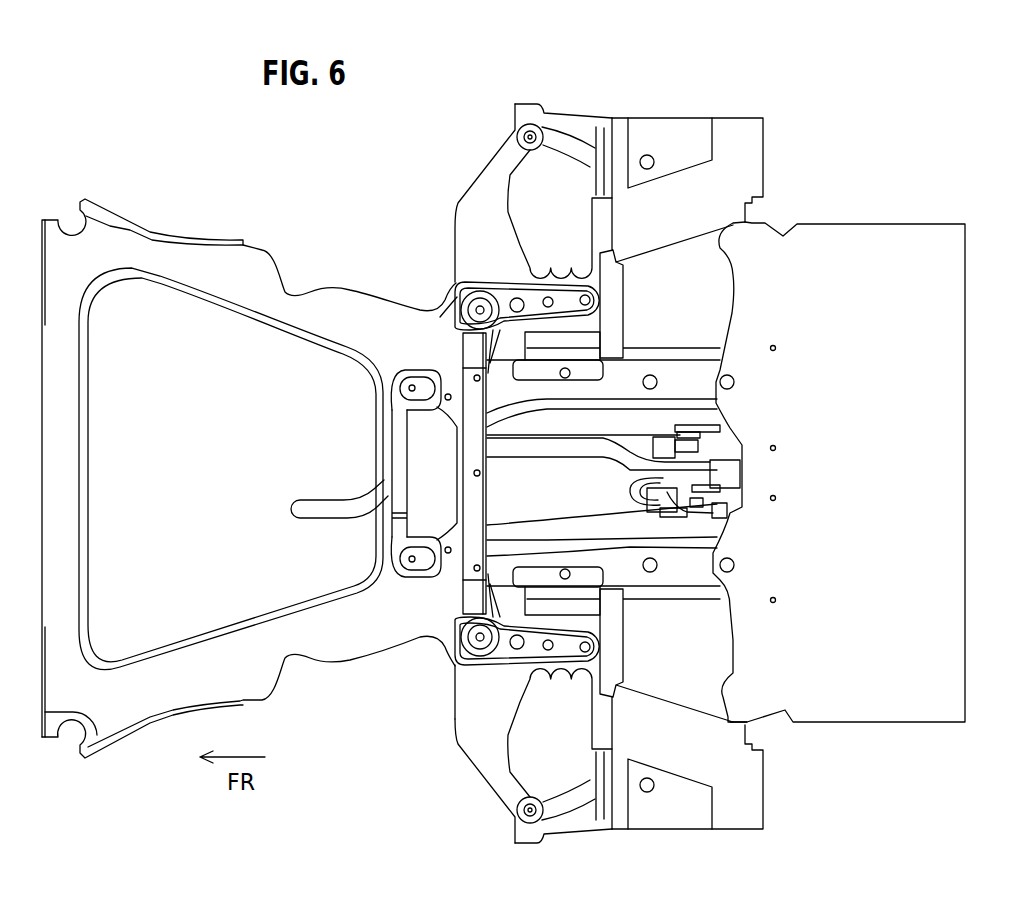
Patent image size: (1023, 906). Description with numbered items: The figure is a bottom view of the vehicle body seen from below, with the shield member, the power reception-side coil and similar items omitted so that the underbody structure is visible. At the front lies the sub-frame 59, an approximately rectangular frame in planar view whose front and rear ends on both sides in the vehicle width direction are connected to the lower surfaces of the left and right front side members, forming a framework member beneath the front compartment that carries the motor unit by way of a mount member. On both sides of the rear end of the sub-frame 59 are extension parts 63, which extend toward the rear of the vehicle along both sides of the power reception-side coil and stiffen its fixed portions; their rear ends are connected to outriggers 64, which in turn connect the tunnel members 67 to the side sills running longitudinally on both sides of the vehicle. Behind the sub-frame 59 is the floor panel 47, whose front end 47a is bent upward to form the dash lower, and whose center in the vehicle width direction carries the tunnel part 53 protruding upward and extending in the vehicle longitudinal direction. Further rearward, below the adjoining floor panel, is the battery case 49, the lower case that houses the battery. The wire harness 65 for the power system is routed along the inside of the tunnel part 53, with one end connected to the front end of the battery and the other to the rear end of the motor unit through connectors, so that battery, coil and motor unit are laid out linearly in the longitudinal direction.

The floor panel 47 is at (743, 130).
The front end of the floor panel 47a is at (458, 708).
The battery case 49 is at (902, 240).
The tunnel part 53 is at (512, 503).
The sub-frame 59 is at (227, 248).
The extension parts 63 is at (514, 296).
The outriggers 64 is at (555, 175).
The wire harness 65 is at (327, 498).
The tunnel members 67 is at (680, 373).